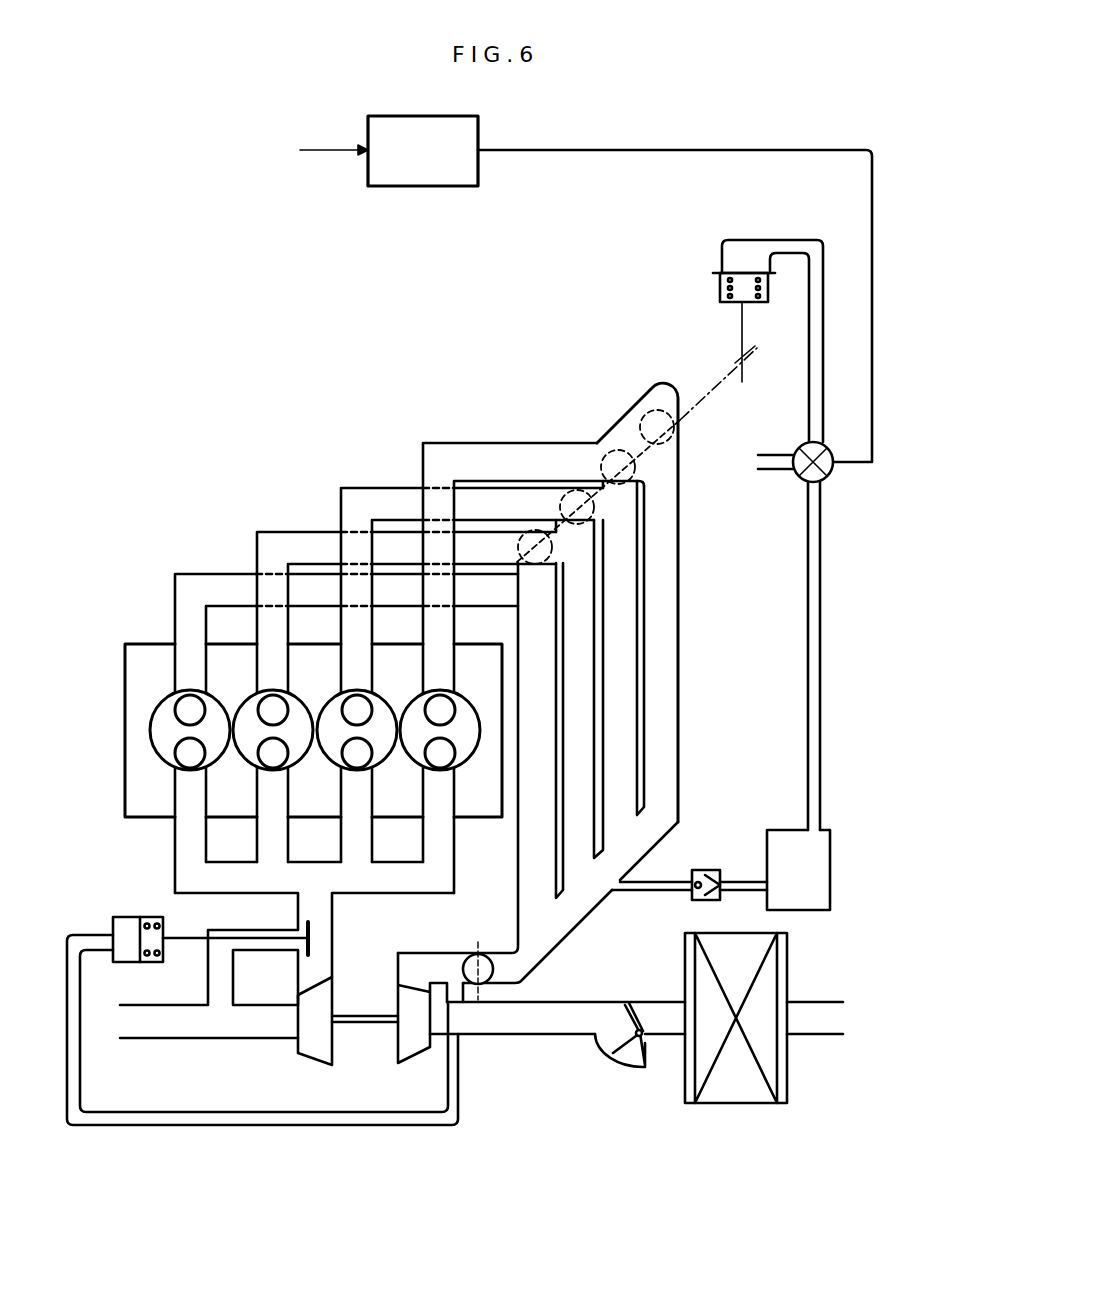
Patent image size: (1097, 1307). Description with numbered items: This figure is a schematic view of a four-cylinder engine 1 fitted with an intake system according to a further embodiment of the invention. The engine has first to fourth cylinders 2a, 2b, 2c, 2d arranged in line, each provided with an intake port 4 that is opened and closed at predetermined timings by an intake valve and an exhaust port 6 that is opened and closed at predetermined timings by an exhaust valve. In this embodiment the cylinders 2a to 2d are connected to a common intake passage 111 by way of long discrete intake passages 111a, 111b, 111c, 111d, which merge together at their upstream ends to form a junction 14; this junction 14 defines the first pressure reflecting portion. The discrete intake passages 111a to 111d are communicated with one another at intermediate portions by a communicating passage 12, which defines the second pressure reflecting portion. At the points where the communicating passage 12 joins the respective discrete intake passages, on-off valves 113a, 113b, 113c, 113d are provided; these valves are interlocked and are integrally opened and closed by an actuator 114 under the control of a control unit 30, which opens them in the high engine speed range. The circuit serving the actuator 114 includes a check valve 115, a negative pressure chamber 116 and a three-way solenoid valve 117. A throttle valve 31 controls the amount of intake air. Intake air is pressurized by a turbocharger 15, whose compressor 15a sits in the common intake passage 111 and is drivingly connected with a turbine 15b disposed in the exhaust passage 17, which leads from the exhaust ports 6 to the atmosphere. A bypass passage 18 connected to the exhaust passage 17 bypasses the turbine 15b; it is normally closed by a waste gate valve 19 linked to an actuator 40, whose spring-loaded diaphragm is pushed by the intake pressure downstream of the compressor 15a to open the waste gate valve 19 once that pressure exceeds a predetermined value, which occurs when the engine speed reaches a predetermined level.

The four-cylinder engine 1 is at (122, 797).
The first cylinder 2a is at (153, 743).
The second cylinder 2b is at (245, 758).
The third cylinder 2c is at (388, 756).
The fourth cylinder 2d is at (480, 712).
The intake port 4 is at (180, 712).
The exhaust port 6 is at (180, 755).
The communicating passage 12 is at (637, 398).
The junction 14 is at (572, 910).
The turbocharger 15 is at (378, 1047).
The compressor 15a is at (408, 1048).
The turbine 15b is at (305, 1040).
The exhaust passage 17 is at (176, 856).
The bypass passage 18 is at (246, 930).
The waste gate valve 19 is at (310, 932).
The control unit 30 is at (478, 118).
The throttle valve 31 is at (466, 958).
The actuator 40 is at (132, 916).
The common intake passage 111 is at (560, 1036).
The discrete intake passage 111a is at (197, 575).
The discrete intake passage 111b is at (290, 533).
The discrete intake passage 111c is at (385, 470).
The discrete intake passage 111d is at (426, 444).
The on-off valve 113a is at (530, 530).
The on-off valve 113b is at (573, 490).
The on-off valve 113c is at (614, 450).
The on-off valve 113d is at (657, 410).
The actuator 114 is at (708, 246).
The check valve 115 is at (706, 870).
The negative pressure chamber 116 is at (822, 850).
The three-way solenoid valve 117 is at (828, 480).